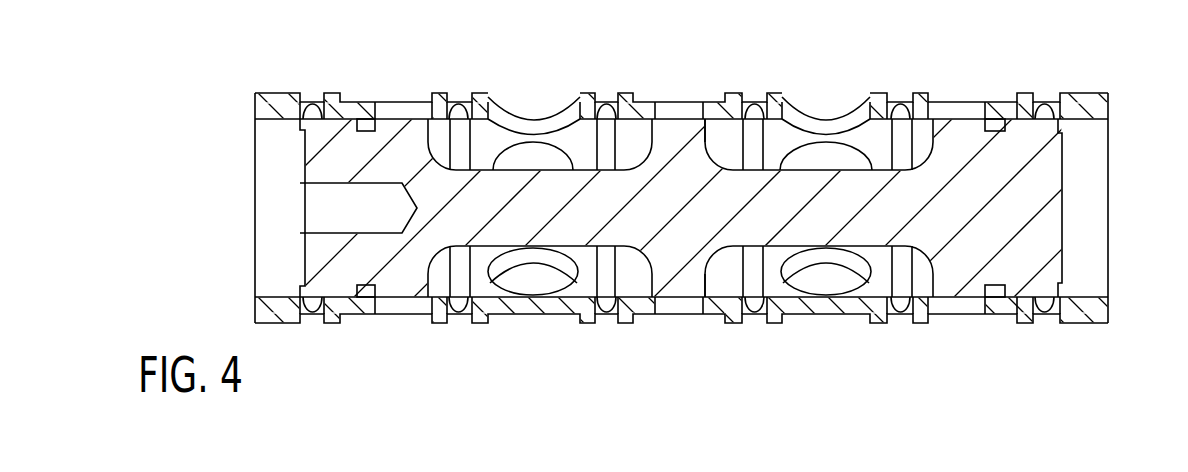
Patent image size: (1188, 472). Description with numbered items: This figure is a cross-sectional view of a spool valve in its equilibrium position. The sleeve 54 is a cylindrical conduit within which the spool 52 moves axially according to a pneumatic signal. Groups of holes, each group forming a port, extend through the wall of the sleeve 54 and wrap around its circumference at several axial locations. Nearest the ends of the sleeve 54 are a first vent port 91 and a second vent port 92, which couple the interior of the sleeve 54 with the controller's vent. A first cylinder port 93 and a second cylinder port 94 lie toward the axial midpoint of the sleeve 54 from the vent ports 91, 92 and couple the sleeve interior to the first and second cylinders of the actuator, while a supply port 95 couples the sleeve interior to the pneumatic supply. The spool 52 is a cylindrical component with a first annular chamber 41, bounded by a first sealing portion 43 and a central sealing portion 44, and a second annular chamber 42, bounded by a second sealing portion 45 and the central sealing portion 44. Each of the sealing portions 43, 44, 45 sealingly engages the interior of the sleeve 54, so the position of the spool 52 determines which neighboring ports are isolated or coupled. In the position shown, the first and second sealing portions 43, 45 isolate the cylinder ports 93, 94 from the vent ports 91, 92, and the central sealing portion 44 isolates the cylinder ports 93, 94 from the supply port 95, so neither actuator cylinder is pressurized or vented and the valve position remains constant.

The sleeve 54 is at (1083, 93).
The first annular chamber 41 is at (632, 280).
The second annular chamber 42 is at (722, 283).
The first sealing portion 43 is at (397, 295).
The central sealing portion 44 is at (682, 288).
The second sealing portion 45 is at (947, 290).
The spool 52 is at (1032, 288).
The first vent port 91 is at (392, 110).
The second vent port 92 is at (958, 110).
The first cylinder port 93 is at (518, 116).
The second cylinder port 94 is at (823, 117).
The supply port 95 is at (680, 110).